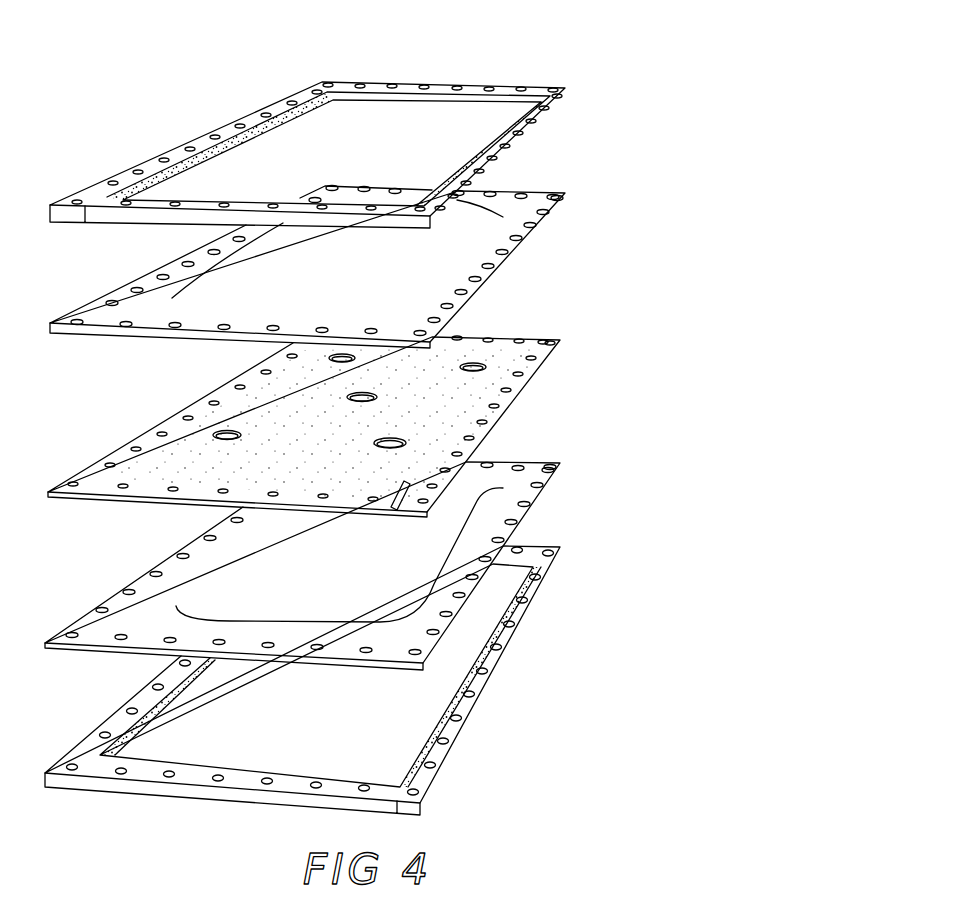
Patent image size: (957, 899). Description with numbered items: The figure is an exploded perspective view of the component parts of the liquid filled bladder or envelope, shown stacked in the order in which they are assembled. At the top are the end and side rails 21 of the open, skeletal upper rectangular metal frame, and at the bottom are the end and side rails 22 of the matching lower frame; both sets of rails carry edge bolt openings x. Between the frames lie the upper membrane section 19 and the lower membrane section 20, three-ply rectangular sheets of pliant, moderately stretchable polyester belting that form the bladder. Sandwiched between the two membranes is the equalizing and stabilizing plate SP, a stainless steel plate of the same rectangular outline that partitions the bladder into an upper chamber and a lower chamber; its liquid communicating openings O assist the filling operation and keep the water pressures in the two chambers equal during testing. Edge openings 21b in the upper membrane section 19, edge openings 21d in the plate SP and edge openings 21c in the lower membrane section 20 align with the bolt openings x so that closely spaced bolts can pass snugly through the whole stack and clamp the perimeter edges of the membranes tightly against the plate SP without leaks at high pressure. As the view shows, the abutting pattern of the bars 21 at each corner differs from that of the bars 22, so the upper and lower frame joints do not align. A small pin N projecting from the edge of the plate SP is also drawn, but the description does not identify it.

The upper frame end and side rails 21 is at (310, 394).
The edge bolt openings x is at (272, 98).
The upper membrane section 19 is at (341, 267).
The edge openings in upper membrane section 21b is at (108, 298).
The equalizing and stabilizing plate SP is at (356, 412).
The edge openings in stabilizing plate 21d is at (220, 387).
The liquid communicating openings O is at (213, 447).
The pin N is at (440, 497).
The lower membrane section 20 is at (330, 566).
The edge openings in lower membrane section 21c is at (103, 608).
The lower frame end and side rails 22 is at (527, 553).